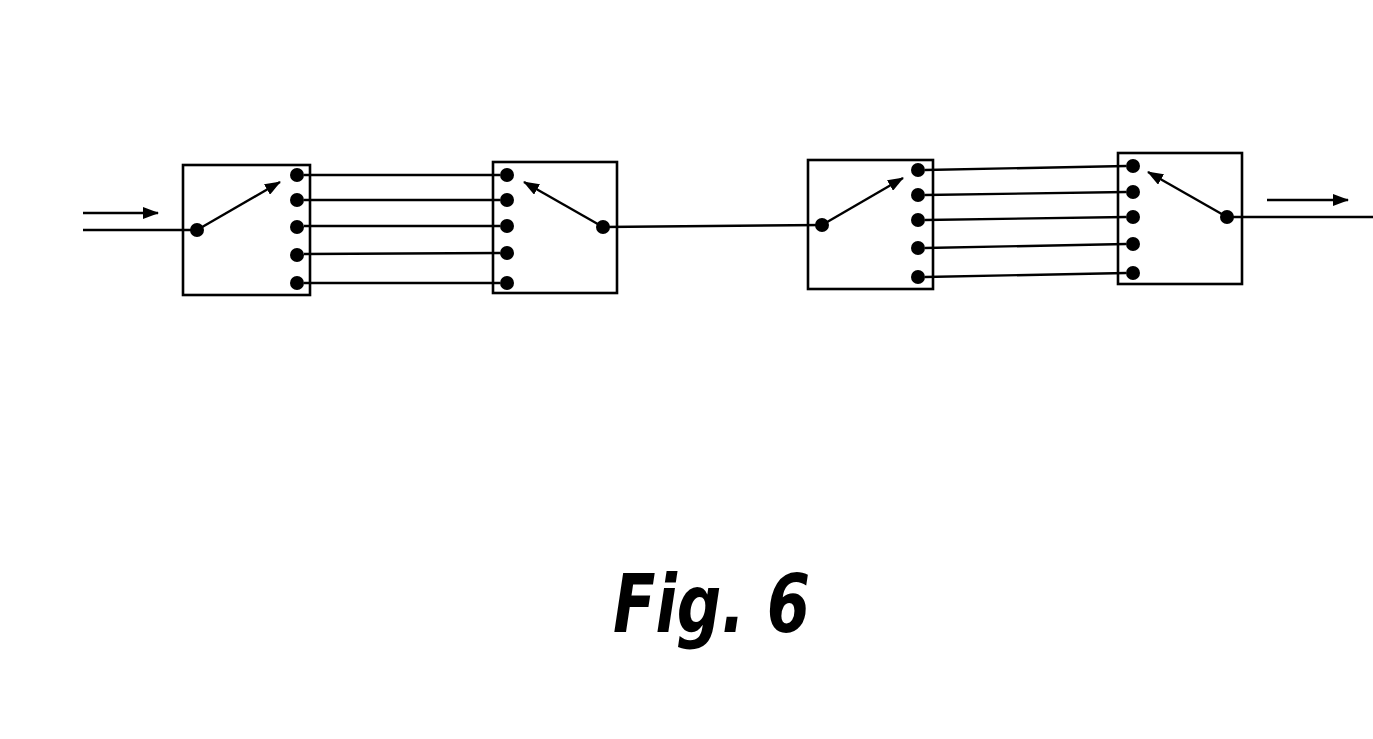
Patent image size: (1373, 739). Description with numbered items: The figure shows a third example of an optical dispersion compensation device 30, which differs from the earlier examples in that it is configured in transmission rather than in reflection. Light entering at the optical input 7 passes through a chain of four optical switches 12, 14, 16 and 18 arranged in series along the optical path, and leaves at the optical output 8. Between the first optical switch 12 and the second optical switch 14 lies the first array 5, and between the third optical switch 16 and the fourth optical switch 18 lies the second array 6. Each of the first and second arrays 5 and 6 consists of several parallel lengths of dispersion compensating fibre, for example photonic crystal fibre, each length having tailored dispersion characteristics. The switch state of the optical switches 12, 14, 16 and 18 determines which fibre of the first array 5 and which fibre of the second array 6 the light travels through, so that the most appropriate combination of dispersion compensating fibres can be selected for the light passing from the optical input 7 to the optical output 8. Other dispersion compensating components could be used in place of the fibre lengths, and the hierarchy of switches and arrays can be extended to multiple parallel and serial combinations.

The dispersion compensation device 30 is at (719, 114).
The optical input 7 is at (138, 230).
The optical output 8 is at (1347, 217).
The optical switch 12 is at (212, 295).
The optical switch 14 is at (580, 293).
The optical switch 16 is at (883, 290).
The optical switch 18 is at (1217, 284).
The first array 5 is at (405, 300).
The second array 6 is at (1036, 294).